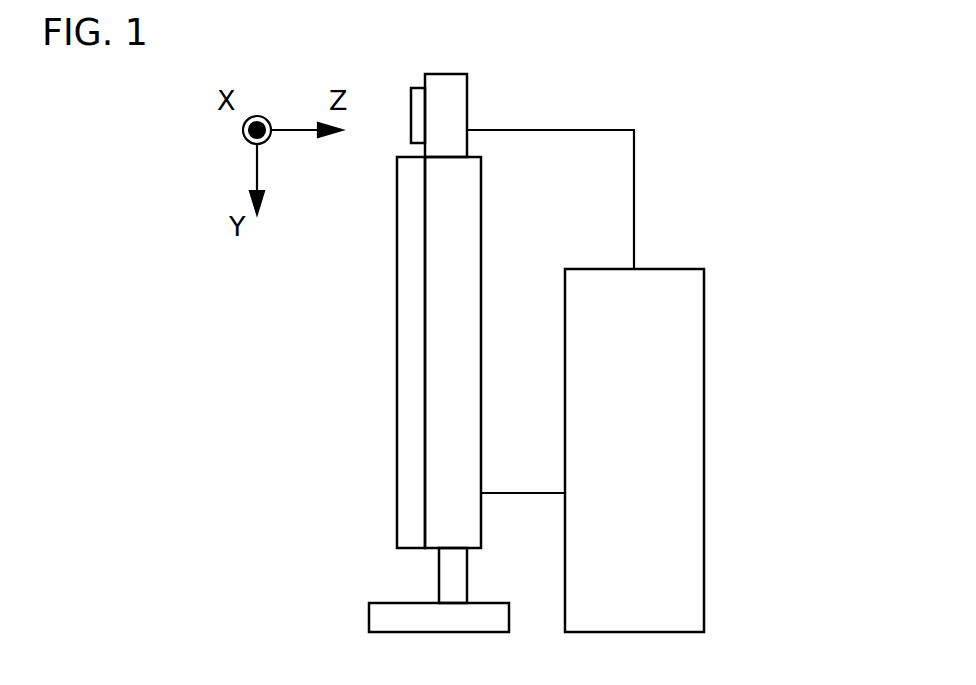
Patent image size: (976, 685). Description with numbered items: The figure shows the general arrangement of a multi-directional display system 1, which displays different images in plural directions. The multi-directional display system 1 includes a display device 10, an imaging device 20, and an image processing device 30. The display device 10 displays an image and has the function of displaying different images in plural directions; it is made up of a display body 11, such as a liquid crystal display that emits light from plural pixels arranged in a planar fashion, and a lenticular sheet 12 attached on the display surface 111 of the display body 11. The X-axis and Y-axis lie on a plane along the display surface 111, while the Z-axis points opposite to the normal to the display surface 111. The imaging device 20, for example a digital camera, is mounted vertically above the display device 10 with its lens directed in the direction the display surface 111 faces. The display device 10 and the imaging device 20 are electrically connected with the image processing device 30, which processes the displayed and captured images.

The multi-directional display system 1 is at (727, 123).
The display device 10 is at (318, 320).
The display body 11 is at (445, 258).
The display surface 111 is at (417, 204).
The lenticular sheet 12 is at (408, 295).
The imaging device 20 is at (467, 100).
The image processing device 30 is at (705, 345).